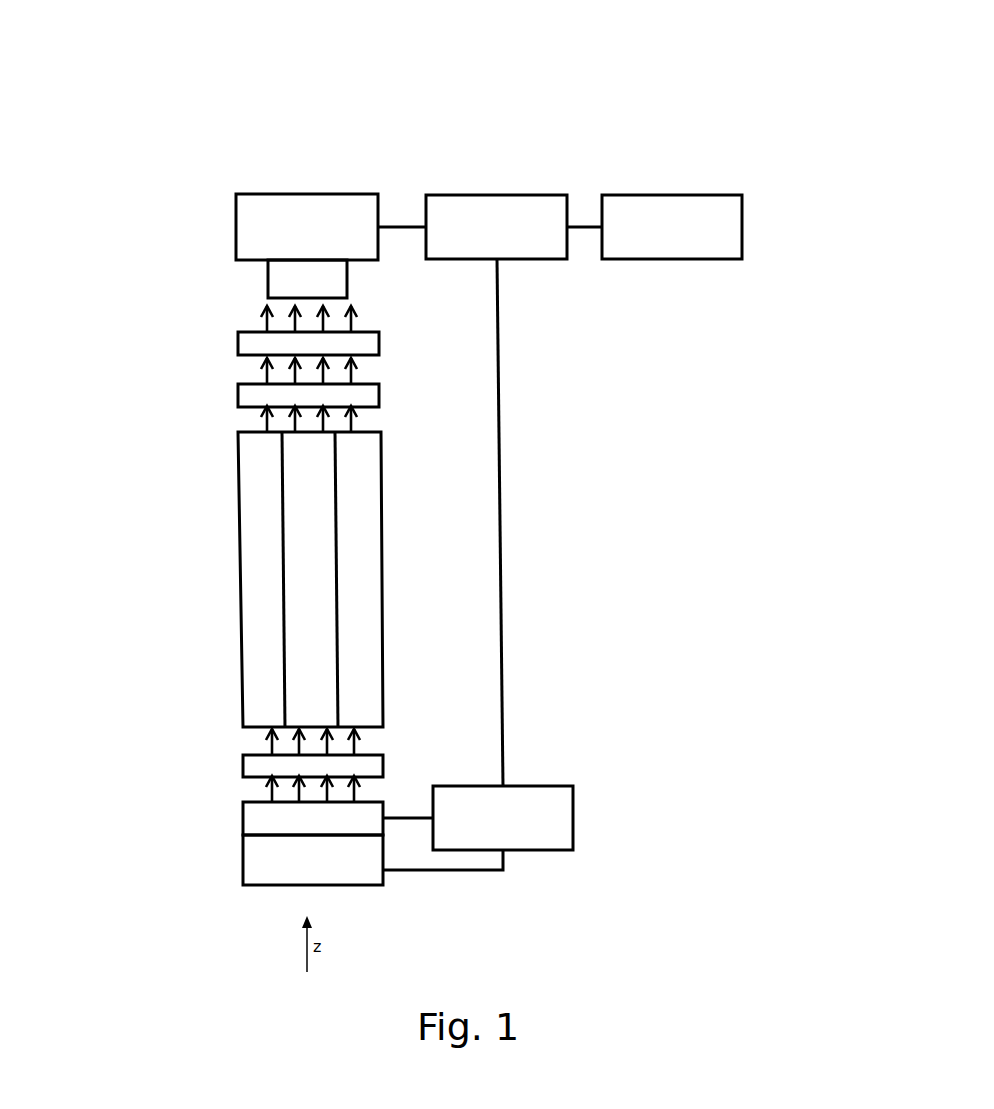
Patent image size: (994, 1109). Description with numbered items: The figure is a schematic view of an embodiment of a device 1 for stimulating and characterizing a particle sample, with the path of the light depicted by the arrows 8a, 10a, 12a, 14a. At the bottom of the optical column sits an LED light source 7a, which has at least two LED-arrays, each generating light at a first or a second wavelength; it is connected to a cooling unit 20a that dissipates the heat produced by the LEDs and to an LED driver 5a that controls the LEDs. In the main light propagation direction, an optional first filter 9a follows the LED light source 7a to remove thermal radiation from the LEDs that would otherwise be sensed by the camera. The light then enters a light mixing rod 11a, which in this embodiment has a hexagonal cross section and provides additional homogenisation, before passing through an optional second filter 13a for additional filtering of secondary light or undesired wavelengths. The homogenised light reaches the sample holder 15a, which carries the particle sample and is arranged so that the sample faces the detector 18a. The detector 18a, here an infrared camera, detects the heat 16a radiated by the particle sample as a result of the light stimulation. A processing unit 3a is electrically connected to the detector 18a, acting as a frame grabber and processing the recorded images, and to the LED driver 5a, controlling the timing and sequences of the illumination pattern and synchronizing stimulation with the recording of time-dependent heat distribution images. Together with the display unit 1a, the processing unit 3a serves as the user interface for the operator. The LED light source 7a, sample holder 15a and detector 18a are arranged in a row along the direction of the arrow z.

The device 1 is at (335, 15).
The display unit 1a is at (742, 223).
The processing unit 3a is at (534, 260).
The LED driver 5a is at (573, 818).
The LED light source 7a is at (240, 817).
The arrows 8a is at (260, 791).
The first filter 9a is at (240, 763).
The arrows 10a is at (260, 742).
The light mixing rod 11a is at (235, 568).
The arrows 12a is at (258, 420).
The second filter 13a is at (235, 395).
The arrows 14a is at (262, 370).
The sample holder 15a is at (238, 344).
The heat 16a is at (258, 308).
The detector 18a is at (228, 227).
The cooling unit 20a is at (240, 851).